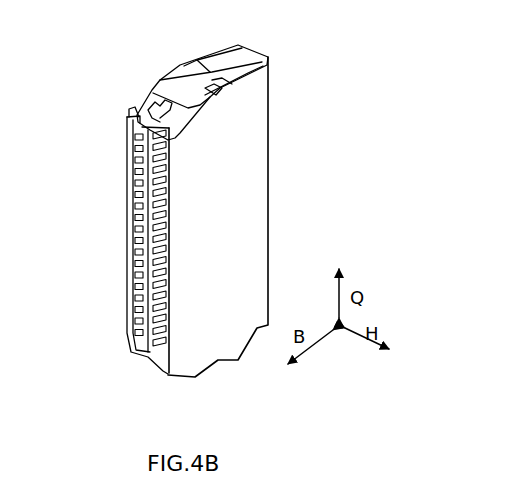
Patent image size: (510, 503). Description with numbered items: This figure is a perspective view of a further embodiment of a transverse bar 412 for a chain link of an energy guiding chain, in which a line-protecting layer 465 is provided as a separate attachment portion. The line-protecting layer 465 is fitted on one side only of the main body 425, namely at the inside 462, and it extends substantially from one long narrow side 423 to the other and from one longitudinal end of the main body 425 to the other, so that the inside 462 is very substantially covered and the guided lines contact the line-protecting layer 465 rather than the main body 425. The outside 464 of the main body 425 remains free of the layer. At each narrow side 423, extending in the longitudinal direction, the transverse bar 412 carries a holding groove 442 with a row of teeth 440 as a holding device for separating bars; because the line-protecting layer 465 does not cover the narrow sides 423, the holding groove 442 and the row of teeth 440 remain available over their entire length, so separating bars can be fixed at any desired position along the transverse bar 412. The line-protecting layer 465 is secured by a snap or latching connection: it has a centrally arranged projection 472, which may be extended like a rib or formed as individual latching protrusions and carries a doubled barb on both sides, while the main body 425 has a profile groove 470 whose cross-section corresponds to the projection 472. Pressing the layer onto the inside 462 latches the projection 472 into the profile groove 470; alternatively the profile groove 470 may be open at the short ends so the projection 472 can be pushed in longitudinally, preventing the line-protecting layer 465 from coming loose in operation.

The transverse bar 412 is at (300, 53).
The profile groove 470 is at (178, 67).
The main body 425 is at (170, 83).
The projection 472 is at (222, 103).
The line-protecting layer 465 is at (238, 155).
The inside 462 is at (282, 222).
The narrow side 423 is at (125, 210).
The holding groove 442 is at (127, 117).
The outside 464 is at (110, 163).
The row of teeth 440 is at (138, 275).